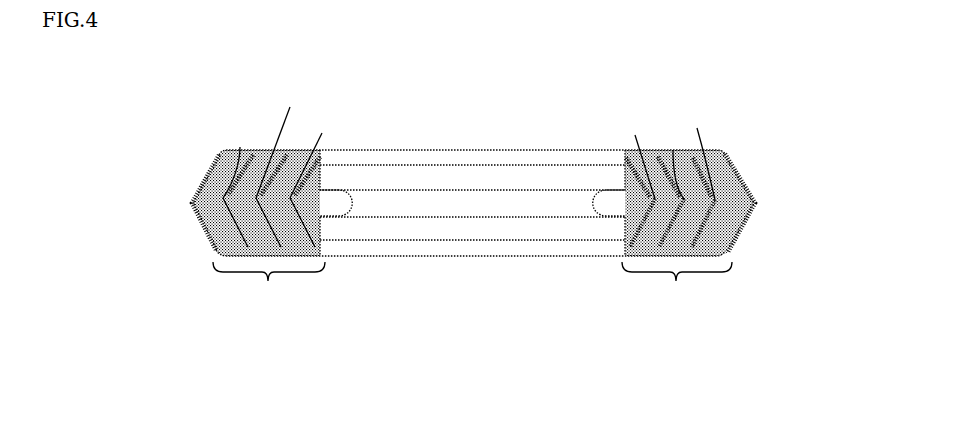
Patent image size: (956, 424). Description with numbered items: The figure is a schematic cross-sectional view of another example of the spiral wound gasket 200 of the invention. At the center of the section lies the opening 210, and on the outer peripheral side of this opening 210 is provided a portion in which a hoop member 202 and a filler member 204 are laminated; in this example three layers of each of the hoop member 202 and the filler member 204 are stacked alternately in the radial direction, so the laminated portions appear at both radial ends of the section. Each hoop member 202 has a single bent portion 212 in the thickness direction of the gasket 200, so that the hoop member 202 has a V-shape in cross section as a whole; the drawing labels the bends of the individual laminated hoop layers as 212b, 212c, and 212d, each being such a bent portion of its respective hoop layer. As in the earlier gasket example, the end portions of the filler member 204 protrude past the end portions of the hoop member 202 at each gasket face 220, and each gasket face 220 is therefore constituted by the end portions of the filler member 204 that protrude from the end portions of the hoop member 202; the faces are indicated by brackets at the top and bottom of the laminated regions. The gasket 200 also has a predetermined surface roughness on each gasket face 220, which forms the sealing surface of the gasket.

The spiral wound gasket 200 is at (434, 124).
The hoop member 202 is at (197, 190).
The filler member 204 is at (208, 178).
The opening 210 is at (623, 180).
The bent portion 212 is at (190, 203).
The ridge 212b is at (240, 147).
The ridge 212c is at (673, 150).
The ridge 212d is at (473, 156).
The gasket face 220 is at (472, 288).